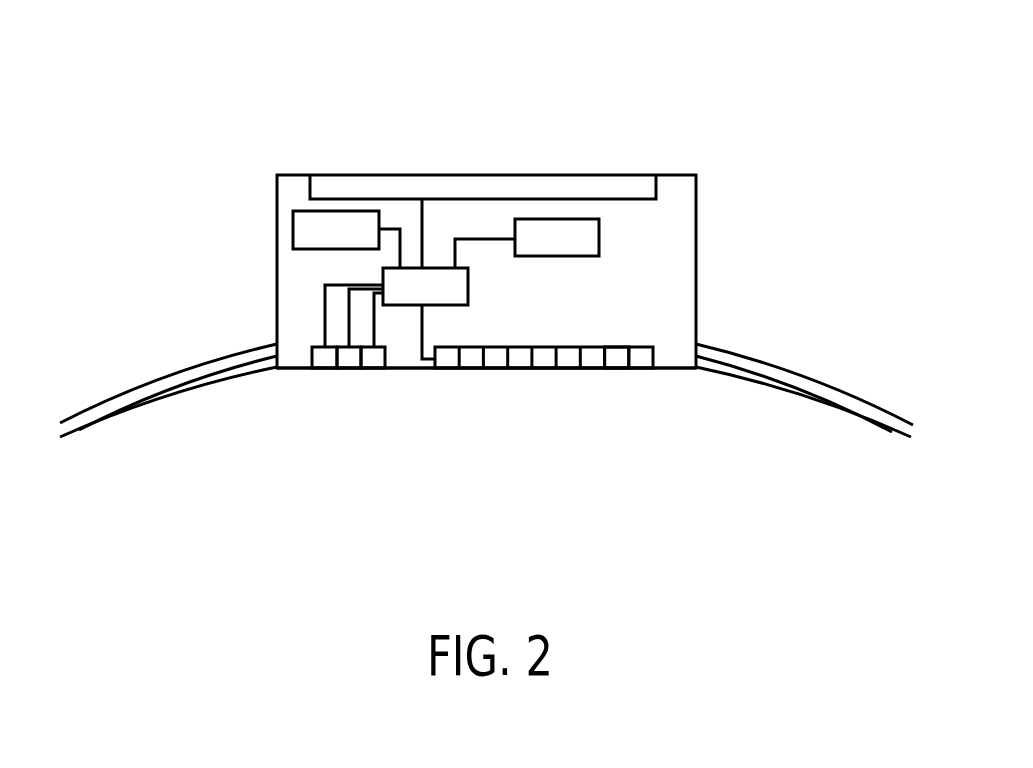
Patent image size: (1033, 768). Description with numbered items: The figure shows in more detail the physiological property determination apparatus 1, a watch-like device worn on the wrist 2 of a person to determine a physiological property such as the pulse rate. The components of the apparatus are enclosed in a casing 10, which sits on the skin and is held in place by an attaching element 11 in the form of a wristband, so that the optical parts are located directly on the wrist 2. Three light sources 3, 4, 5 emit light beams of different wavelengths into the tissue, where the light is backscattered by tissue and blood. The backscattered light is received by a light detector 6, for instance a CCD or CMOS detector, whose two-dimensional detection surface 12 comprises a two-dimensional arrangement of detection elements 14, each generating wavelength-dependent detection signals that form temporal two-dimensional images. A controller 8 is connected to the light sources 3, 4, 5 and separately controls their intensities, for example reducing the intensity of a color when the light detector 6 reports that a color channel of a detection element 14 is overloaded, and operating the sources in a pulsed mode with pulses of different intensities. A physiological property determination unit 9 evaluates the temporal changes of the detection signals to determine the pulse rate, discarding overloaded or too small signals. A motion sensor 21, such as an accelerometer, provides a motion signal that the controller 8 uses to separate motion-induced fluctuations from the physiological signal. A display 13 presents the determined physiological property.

The physiological property determination apparatus 1 is at (742, 89).
The wrist 2 is at (497, 503).
The light source 3 is at (325, 363).
The light source 4 is at (350, 363).
The light source 5 is at (372, 363).
The light detector 6 is at (618, 325).
The controller 8 is at (382, 272).
The physiological property determination unit 9 is at (600, 240).
The casing 10 is at (697, 313).
The attaching element 11 is at (838, 377).
The two-dimensional detection surface 12 is at (518, 402).
The display 13 is at (529, 173).
The detection element 14 is at (617, 363).
The motion sensor 21 is at (293, 230).